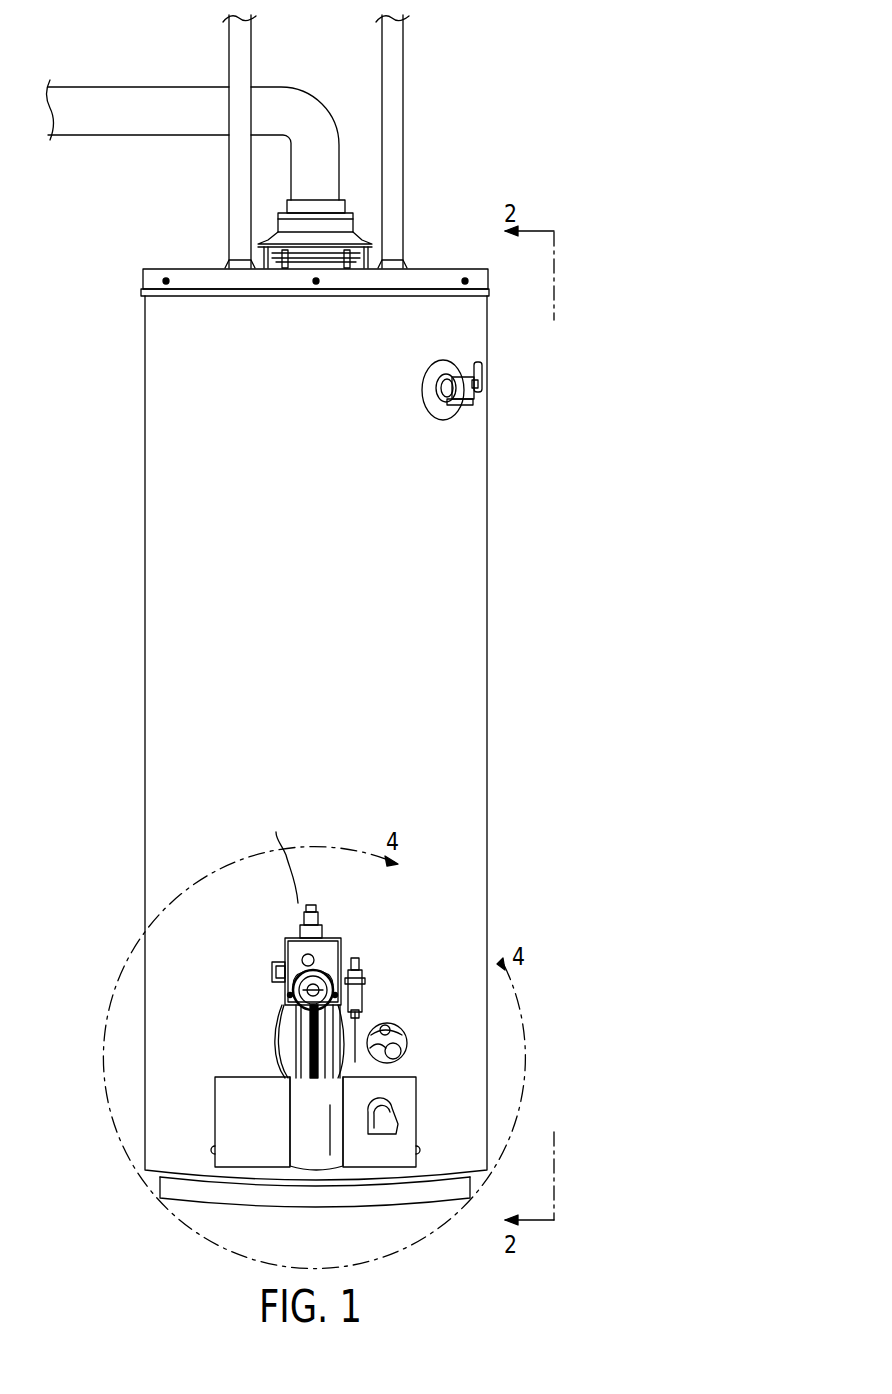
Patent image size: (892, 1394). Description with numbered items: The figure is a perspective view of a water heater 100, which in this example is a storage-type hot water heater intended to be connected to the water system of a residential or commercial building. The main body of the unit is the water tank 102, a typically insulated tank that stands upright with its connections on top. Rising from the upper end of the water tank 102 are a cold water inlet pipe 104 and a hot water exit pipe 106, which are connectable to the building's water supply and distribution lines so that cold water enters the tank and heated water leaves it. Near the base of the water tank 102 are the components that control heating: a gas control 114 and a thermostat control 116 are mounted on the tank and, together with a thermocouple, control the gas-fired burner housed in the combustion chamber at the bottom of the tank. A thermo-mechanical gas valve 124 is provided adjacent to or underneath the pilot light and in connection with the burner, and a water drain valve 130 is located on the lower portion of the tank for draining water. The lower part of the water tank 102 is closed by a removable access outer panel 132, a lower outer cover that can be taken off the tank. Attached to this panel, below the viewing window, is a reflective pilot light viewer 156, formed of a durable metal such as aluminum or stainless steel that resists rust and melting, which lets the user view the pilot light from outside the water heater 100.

The water heater 100 is at (585, 456).
The water tank 102 is at (465, 557).
The cold water inlet pipe 104 is at (396, 173).
The hot water exit pipe 106 is at (235, 195).
The gas control 114 is at (313, 938).
The thermostat control 116 is at (280, 995).
The thermo-mechanical gas valve 124 is at (286, 945).
The water drain valve 130 is at (398, 1024).
The access outer panel 132 is at (240, 1108).
The reflective pilot light viewer 156 is at (400, 1120).